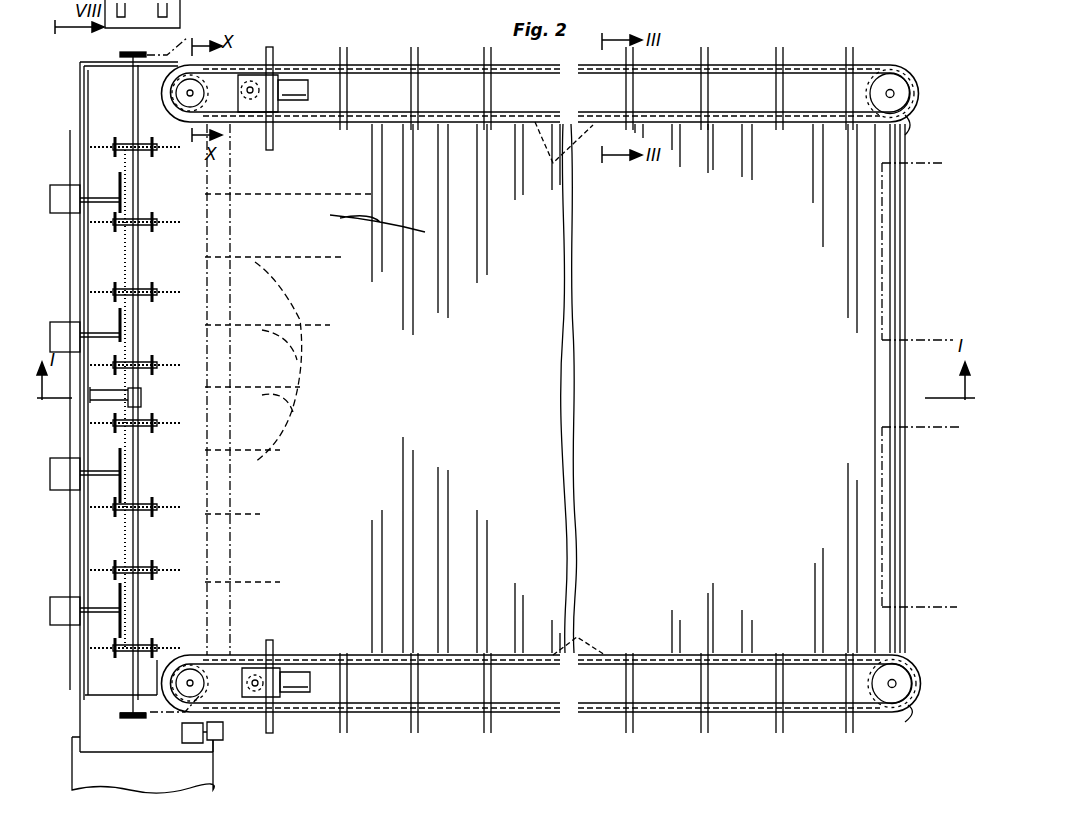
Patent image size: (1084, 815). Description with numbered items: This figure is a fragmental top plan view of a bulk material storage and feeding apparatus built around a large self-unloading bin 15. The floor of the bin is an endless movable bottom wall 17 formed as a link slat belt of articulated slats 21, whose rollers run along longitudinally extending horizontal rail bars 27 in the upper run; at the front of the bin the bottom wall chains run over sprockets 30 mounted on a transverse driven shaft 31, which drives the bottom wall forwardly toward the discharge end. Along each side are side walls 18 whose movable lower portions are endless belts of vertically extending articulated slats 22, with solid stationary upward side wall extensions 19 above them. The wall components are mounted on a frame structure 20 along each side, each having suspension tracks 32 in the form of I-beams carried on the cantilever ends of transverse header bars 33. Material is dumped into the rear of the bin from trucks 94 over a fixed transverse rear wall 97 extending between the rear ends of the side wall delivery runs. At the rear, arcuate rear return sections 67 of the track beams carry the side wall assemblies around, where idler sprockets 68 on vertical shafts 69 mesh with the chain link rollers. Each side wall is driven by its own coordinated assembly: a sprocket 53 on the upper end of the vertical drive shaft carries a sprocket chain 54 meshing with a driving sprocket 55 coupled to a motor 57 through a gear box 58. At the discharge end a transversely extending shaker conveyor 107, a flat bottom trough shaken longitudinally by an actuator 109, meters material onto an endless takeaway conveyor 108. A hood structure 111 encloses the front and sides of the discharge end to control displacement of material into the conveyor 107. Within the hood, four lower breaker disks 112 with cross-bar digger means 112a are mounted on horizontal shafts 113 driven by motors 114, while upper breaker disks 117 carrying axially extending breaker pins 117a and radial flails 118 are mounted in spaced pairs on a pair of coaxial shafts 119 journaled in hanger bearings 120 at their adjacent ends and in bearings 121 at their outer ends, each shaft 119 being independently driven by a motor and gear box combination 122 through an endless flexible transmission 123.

The self-unloading bin 15 is at (348, 118).
The bottom wall 17 is at (582, 328).
The side walls 18 is at (467, 135).
The upward side wall extensions 19 is at (835, 128).
The frame structure 20 is at (720, 70).
The articulated slats 21 is at (365, 220).
The articulated slats 22 is at (553, 162).
The rail bars 27 is at (290, 332).
The sprockets 30 is at (245, 322).
The driven shaft 31 is at (232, 612).
The suspension tracks 32 is at (678, 68).
The header bars 33 is at (412, 72).
The sprocket 53 is at (182, 105).
The sprocket chain 54 is at (243, 85).
The driving sprocket 55 is at (262, 75).
The motor 57 is at (300, 100).
The gear box 58 is at (260, 115).
The arcuate rear return sections 67 is at (910, 125).
The idler sprockets 68 is at (887, 78).
The vertical shafts 69 is at (895, 90).
The trucks 94 is at (918, 365).
The fixed transverse rear wall 97 is at (895, 495).
The shaker conveyor 107 is at (90, 707).
The takeaway conveyor 108 is at (213, 766).
The shaker actuator 109 is at (148, 22).
The hood structure 111 is at (82, 63).
The breaker disks 112 is at (125, 235).
The digger means 112a is at (138, 228).
The horizontal shafts 113 is at (110, 194).
The driving motors 114 is at (62, 210).
The upper breaker disks 117 is at (165, 148).
The breaker pins 117a is at (115, 160).
The flails 118 is at (170, 170).
The coaxial shafts 119 is at (142, 394).
The hanger bearings 120 is at (122, 404).
The bearings 121 is at (128, 72).
The motor and gear box combination 122 is at (210, 745).
The endless flexible transmission 123 is at (183, 38).